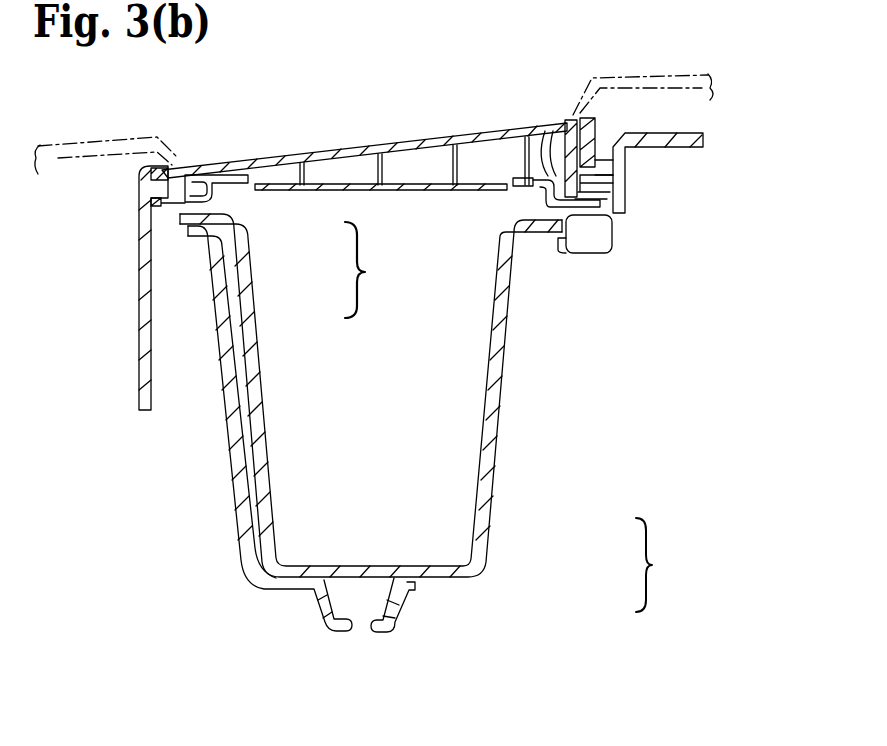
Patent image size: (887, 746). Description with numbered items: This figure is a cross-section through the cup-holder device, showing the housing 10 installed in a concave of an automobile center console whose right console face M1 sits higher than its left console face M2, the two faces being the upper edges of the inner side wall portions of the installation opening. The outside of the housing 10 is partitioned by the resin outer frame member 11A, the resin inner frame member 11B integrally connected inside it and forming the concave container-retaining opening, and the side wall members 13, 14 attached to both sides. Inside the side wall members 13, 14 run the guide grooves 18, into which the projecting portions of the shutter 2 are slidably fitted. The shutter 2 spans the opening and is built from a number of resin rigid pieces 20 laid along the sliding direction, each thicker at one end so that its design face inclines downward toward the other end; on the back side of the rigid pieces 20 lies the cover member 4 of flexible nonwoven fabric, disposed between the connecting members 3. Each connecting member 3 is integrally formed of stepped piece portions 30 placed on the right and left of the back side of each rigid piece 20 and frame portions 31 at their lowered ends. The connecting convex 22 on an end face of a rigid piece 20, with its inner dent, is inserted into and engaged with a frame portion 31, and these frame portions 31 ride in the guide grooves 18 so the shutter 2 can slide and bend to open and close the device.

The shutter 2 is at (364, 127).
The rigid piece 20 is at (394, 142).
The connecting member 3 is at (538, 187).
The cover member 4 is at (414, 191).
The housing 10 is at (433, 423).
The outer frame member 11A is at (414, 604).
The inner frame member 11B is at (490, 540).
The side wall member 13 is at (626, 184).
The side wall member 14 is at (141, 375).
The guide groove 18 is at (169, 174).
The connecting convex 22 is at (624, 196).
The piece portion 30 is at (228, 183).
The frame portion 31 is at (163, 224).
The right console face M1 is at (608, 74).
The left console face M2 is at (120, 136).